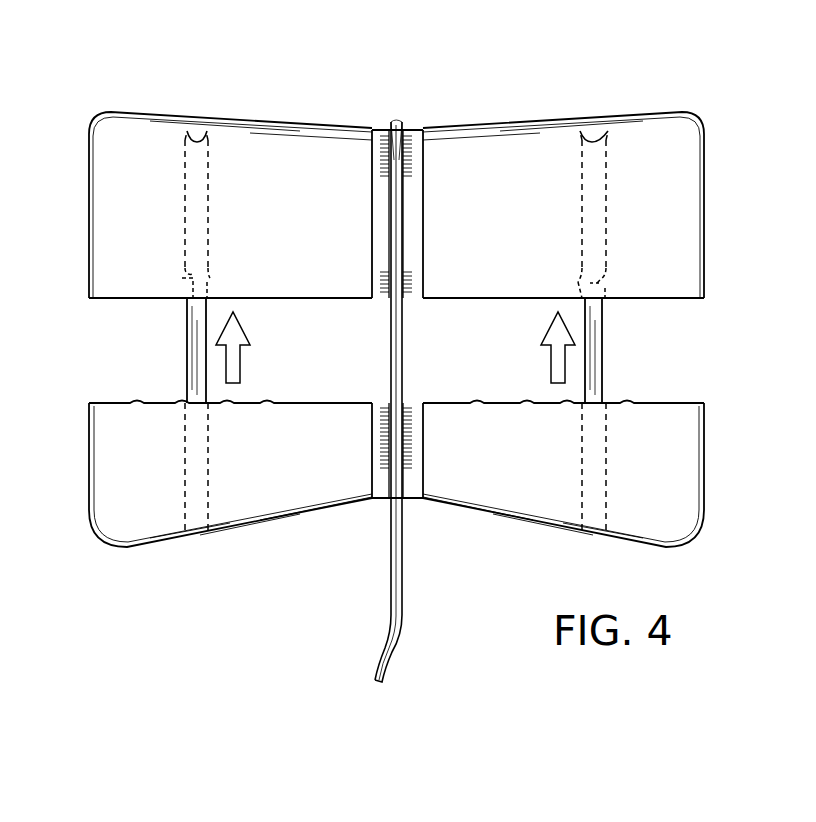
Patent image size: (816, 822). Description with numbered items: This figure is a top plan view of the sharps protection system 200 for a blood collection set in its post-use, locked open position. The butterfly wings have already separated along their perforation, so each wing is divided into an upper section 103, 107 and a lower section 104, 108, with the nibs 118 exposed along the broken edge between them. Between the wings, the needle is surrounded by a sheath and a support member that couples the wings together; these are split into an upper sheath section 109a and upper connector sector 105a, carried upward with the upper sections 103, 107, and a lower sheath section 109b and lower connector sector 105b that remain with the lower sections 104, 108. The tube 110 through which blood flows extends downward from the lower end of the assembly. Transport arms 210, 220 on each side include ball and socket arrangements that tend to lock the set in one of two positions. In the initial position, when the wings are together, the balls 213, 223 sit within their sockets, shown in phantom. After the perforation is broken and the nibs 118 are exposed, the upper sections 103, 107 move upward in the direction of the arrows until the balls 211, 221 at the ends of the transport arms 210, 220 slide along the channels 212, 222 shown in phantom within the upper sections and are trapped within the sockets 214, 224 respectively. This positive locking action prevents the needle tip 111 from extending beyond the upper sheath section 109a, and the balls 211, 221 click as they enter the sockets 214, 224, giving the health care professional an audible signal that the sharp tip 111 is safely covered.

The sharps protection system 200 is at (283, 72).
The upper section 107 is at (104, 145).
The upper section 103 is at (675, 130).
The lower section 108 is at (118, 520).
The lower section 104 is at (682, 510).
The upper sheath section 109a is at (438, 96).
The lower sheath section 109b is at (375, 478).
The upper connector sector 105a is at (417, 165).
The lower connector sector 105b is at (415, 465).
The sharp tip 111 is at (390, 122).
The tube 110 is at (404, 625).
The nibs 118 is at (160, 403).
The channel 212 is at (190, 176).
The ball 213 is at (207, 132).
The socket 214 is at (185, 270).
The ball 211 is at (180, 280).
The transport arm 210 is at (188, 345).
The right strap hidden portion 222 is at (600, 205).
The ball 223 is at (580, 131).
The socket 224 is at (607, 270).
The ball 221 is at (605, 288).
The transport arm 220 is at (600, 358).